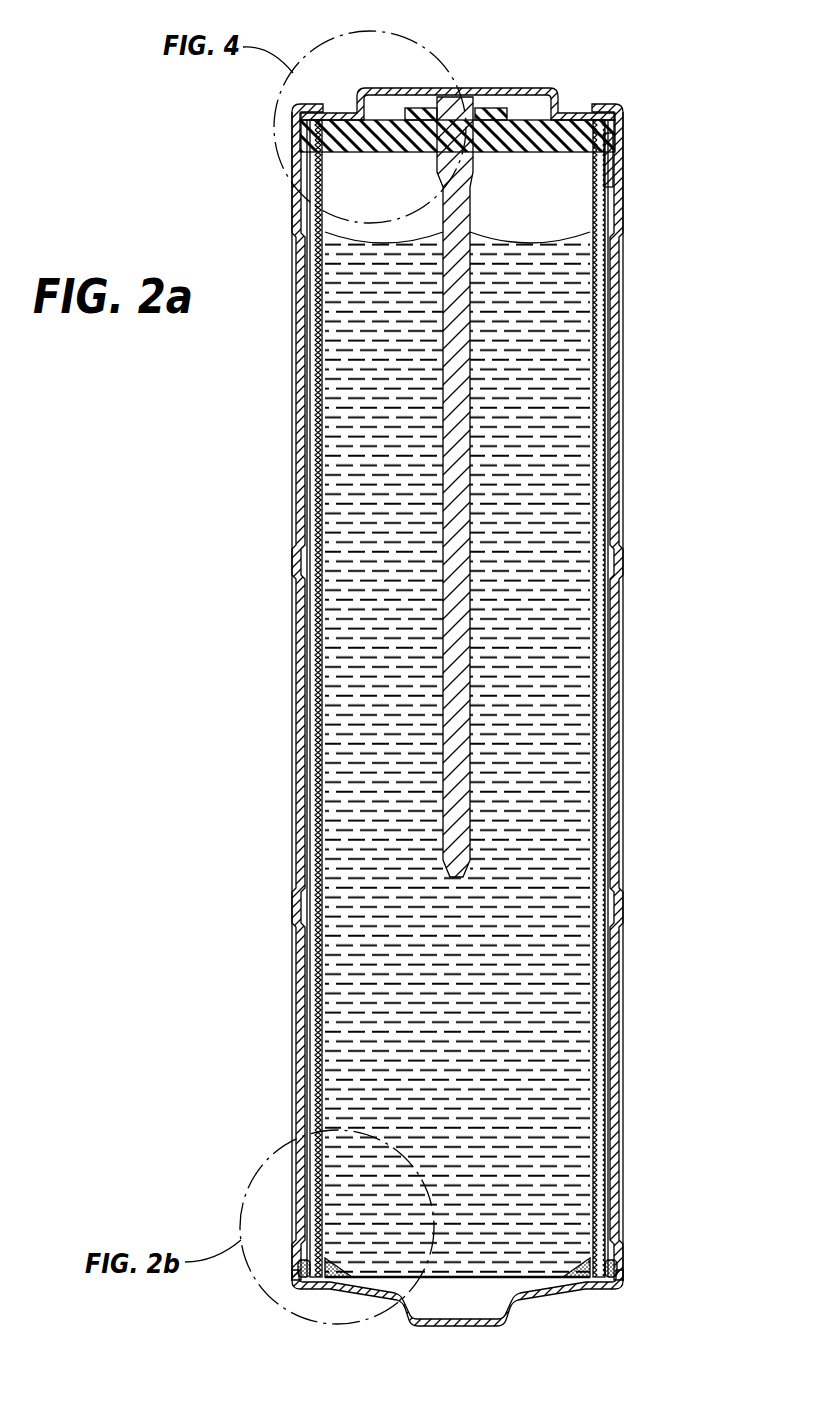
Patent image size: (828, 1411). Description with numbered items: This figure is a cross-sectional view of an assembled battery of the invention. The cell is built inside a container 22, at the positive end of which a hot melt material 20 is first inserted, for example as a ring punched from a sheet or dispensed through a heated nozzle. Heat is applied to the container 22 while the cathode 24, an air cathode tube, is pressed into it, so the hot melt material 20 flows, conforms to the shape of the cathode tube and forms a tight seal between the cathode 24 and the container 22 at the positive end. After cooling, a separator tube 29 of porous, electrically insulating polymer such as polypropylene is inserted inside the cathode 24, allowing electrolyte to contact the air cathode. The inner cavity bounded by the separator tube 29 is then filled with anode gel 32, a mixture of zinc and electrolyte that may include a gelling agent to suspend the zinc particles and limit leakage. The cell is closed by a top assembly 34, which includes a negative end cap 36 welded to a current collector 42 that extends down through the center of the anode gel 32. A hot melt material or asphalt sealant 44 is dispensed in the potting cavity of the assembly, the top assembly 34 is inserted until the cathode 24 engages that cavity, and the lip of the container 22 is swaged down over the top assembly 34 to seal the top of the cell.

The hot melt material 20 is at (621, 1270).
The container 22 is at (621, 933).
The cathode 24 is at (600, 723).
The separator tube 29 is at (590, 193).
The anode gel 32 is at (555, 405).
The top assembly 34 is at (567, 128).
The negative end cap 36 is at (530, 88).
The current collector 42 is at (470, 97).
The asphalt sealant 44 is at (608, 137).